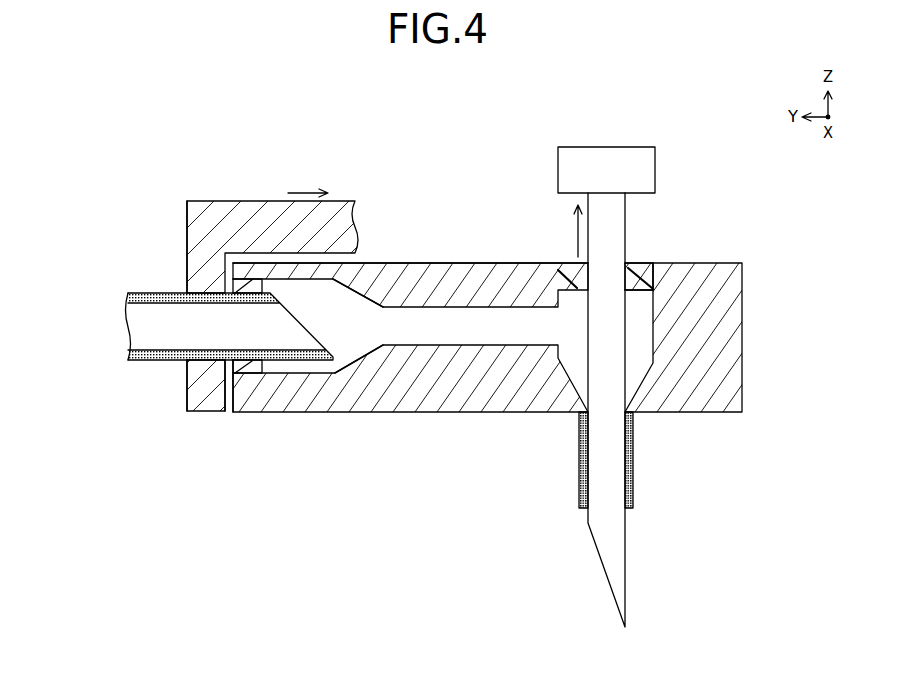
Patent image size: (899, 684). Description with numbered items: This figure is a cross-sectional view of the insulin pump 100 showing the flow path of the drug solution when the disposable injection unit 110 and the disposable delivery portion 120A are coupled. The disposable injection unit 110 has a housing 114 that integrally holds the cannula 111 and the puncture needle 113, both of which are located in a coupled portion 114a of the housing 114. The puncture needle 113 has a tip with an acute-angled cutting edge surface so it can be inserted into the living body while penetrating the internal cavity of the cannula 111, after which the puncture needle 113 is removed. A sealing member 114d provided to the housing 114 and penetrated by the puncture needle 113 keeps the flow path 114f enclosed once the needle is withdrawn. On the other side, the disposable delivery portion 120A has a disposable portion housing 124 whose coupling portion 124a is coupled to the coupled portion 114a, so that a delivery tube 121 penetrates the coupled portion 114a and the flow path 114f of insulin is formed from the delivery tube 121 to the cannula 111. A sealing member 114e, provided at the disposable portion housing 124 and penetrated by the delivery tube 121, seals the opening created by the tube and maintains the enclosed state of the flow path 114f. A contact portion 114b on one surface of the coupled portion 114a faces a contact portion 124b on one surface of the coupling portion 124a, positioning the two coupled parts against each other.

The insulin pump 100 is at (113, 127).
The disposable delivery portion 120A is at (135, 180).
The disposable portion housing 124 is at (252, 201).
The coupling portion 124a is at (187, 235).
The contact portion 124b is at (237, 390).
The delivery tube 121 is at (182, 362).
The housing 114 is at (422, 264).
The coupled portion 114a is at (367, 267).
The contact portion 114b is at (228, 382).
The sealing member 114d is at (643, 268).
The sealing member 114e is at (250, 368).
The flow path 114f is at (352, 343).
The disposable injection unit 110 is at (435, 195).
The cannula 111 is at (579, 468).
The puncture needle 113 is at (603, 543).